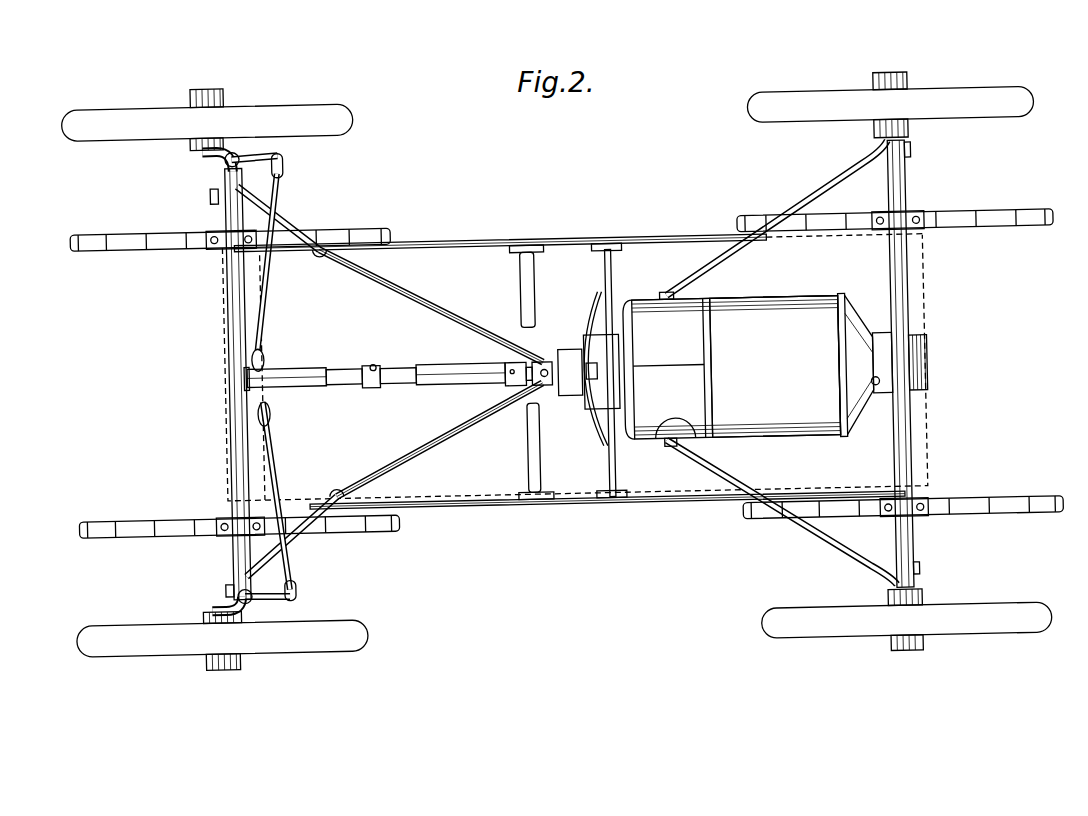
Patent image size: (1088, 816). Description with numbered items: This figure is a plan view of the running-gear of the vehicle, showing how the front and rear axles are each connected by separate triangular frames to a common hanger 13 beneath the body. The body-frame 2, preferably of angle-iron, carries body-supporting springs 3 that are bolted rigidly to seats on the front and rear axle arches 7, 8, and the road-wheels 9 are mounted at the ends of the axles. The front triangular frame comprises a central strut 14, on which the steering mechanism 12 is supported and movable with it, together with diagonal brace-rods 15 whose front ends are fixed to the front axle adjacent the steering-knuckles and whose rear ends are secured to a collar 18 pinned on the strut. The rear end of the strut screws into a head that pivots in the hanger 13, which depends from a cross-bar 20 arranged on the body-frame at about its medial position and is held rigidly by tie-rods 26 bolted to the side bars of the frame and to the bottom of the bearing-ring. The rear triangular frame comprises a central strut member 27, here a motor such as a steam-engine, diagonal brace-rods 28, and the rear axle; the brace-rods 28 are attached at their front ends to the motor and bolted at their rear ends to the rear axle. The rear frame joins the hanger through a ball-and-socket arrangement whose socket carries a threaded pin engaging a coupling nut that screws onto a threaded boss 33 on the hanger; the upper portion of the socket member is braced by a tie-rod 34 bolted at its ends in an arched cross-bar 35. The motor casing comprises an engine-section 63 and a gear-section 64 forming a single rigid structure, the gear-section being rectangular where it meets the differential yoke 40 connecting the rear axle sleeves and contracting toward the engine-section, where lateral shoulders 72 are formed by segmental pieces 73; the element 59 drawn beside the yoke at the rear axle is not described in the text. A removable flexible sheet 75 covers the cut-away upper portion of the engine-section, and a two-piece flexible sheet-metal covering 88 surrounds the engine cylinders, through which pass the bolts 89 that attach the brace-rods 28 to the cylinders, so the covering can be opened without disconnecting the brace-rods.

The body-frame 2 is at (456, 241).
The body-supporting springs 3 is at (132, 226).
The front axle arch 7 is at (230, 296).
The rear axle arch 8 is at (898, 278).
The road-wheels 9 is at (360, 108).
The steering mechanism 12 is at (374, 362).
The hanger 13 is at (544, 360).
The central strut 14 is at (394, 380).
The diagonal brace-rods 15 is at (455, 323).
The collar 18 is at (506, 376).
The cross-bar 20 is at (535, 480).
The tie-rods 26 is at (482, 327).
The central strut member 27 is at (732, 379).
The diagonal brace-rods 28 is at (817, 196).
The threaded boss 33 is at (557, 390).
The tie-rod 34 is at (593, 424).
The arched cross-bar 35 is at (613, 283).
The differential yoke 40 is at (891, 353).
The gear 59 is at (926, 383).
The engine-section 63 is at (775, 367).
The gear-section 64 is at (874, 387).
The lateral extensions or shoulders 72 is at (854, 304).
The segmental pieces 73 is at (875, 312).
The flexible sheet 75 is at (767, 303).
The flexible sheet-metal covering 88 is at (668, 351).
The bolts 89 is at (669, 450).